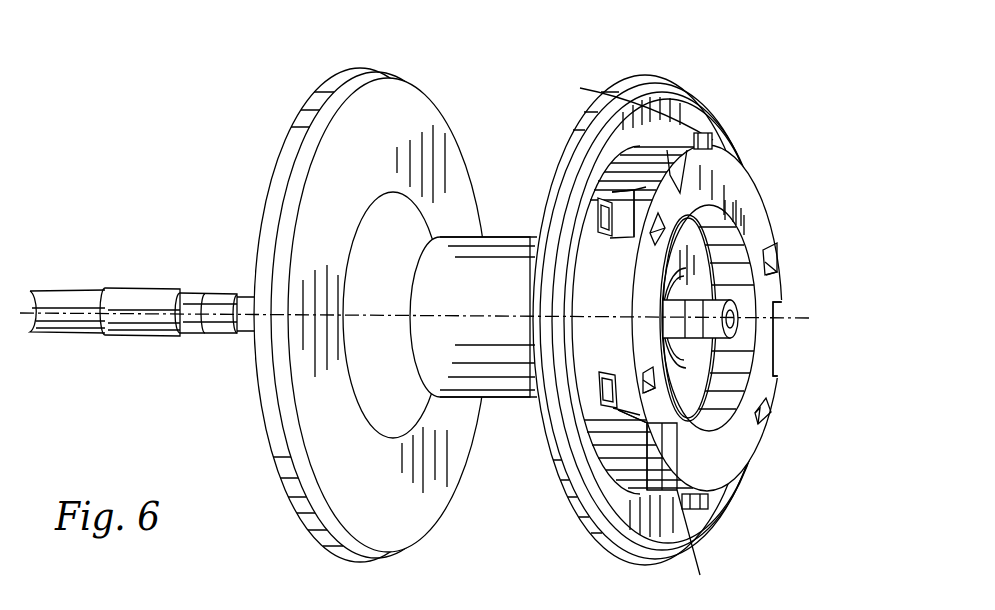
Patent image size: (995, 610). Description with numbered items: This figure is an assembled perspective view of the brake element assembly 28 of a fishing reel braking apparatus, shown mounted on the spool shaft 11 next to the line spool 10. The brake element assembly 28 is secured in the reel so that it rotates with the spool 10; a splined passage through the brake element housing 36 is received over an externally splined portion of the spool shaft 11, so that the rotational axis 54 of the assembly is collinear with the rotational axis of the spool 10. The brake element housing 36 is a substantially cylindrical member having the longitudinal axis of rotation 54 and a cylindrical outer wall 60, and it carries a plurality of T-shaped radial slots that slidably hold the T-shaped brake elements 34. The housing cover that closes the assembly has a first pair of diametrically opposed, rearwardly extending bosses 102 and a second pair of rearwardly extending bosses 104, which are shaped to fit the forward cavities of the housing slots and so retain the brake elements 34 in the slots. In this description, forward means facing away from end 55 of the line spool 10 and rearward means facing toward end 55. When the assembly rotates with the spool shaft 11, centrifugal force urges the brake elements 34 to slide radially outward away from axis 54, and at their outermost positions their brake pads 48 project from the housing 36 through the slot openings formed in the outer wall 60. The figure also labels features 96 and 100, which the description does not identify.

The line spool 10 is at (410, 108).
The spool shaft 11 is at (200, 292).
The brake element assembly 28 is at (737, 173).
The brake elements 34 is at (705, 130).
The brake element housing 36 is at (598, 312).
The brake pads 48 is at (602, 193).
The longitudinal axis of rotation 54 is at (798, 313).
The end of line spool 55 is at (670, 75).
The cylindrical outer wall 60 is at (612, 535).
The plate face 96 is at (750, 212).
The recess 100 is at (777, 358).
The first pair of rearwardly extending bosses 102 is at (620, 378).
The second pair of rearwardly extending bosses 104 is at (623, 223).